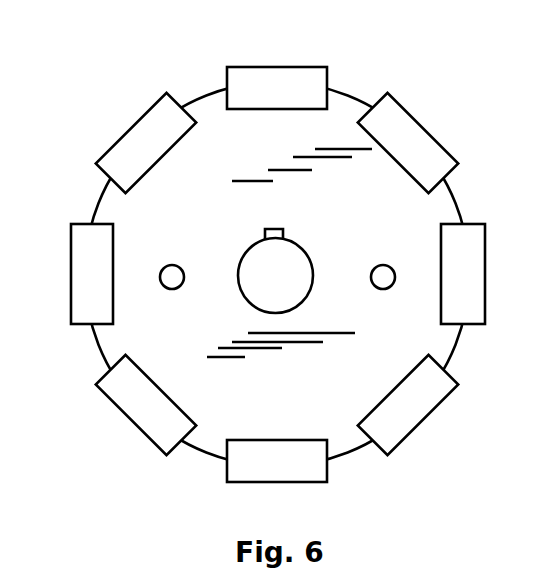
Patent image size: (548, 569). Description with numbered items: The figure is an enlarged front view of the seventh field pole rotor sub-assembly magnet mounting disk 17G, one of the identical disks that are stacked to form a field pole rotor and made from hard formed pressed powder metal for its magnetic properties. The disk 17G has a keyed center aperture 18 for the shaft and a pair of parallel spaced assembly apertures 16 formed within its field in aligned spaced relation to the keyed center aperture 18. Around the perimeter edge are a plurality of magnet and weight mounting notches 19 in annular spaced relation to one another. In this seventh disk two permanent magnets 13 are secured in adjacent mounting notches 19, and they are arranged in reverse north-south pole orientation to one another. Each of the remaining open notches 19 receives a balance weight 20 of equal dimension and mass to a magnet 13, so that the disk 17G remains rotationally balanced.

The permanent magnet 13 is at (407, 115).
The assembly apertures 16 is at (175, 266).
The sub-assembly disk 17G is at (348, 96).
The keyed center aperture 18 is at (302, 250).
The magnet and weight mounting notches 19 is at (272, 440).
The balance weight 20 is at (260, 74).